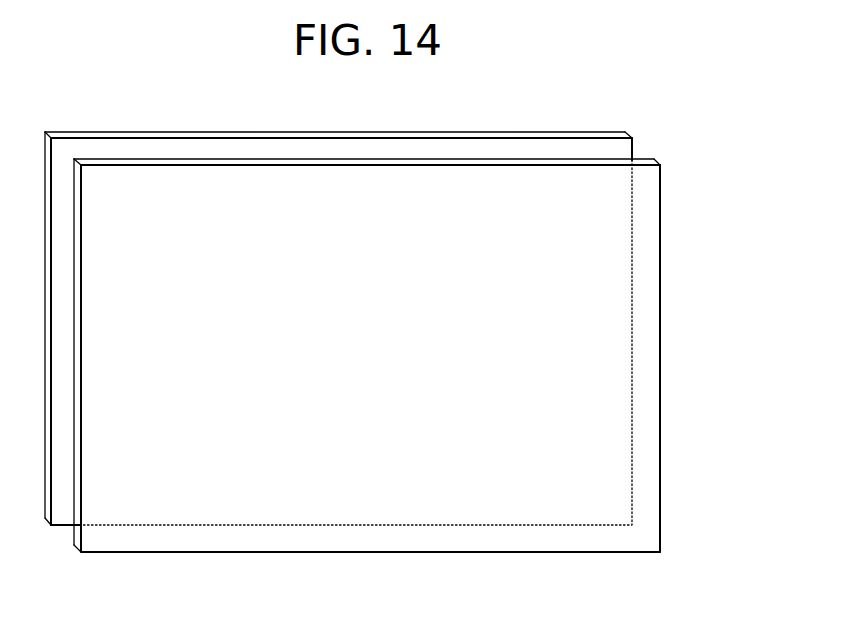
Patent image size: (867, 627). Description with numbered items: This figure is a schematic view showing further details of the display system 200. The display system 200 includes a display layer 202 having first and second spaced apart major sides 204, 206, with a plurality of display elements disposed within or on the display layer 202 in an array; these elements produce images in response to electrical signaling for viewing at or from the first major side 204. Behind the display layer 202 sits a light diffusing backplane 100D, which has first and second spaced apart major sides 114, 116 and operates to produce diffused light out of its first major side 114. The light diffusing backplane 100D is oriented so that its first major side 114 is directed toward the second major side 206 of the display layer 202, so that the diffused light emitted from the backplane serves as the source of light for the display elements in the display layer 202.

The display system 200 is at (142, 93).
The light diffusing backplane 100D is at (470, 137).
The first major side of the light diffusing backplane 114 is at (202, 153).
The second major side of the light diffusing backplane 116 is at (425, 128).
The display layer 202 is at (645, 157).
The first major side of the display layer 204 is at (647, 250).
The second major side of the display layer 206 is at (647, 307).